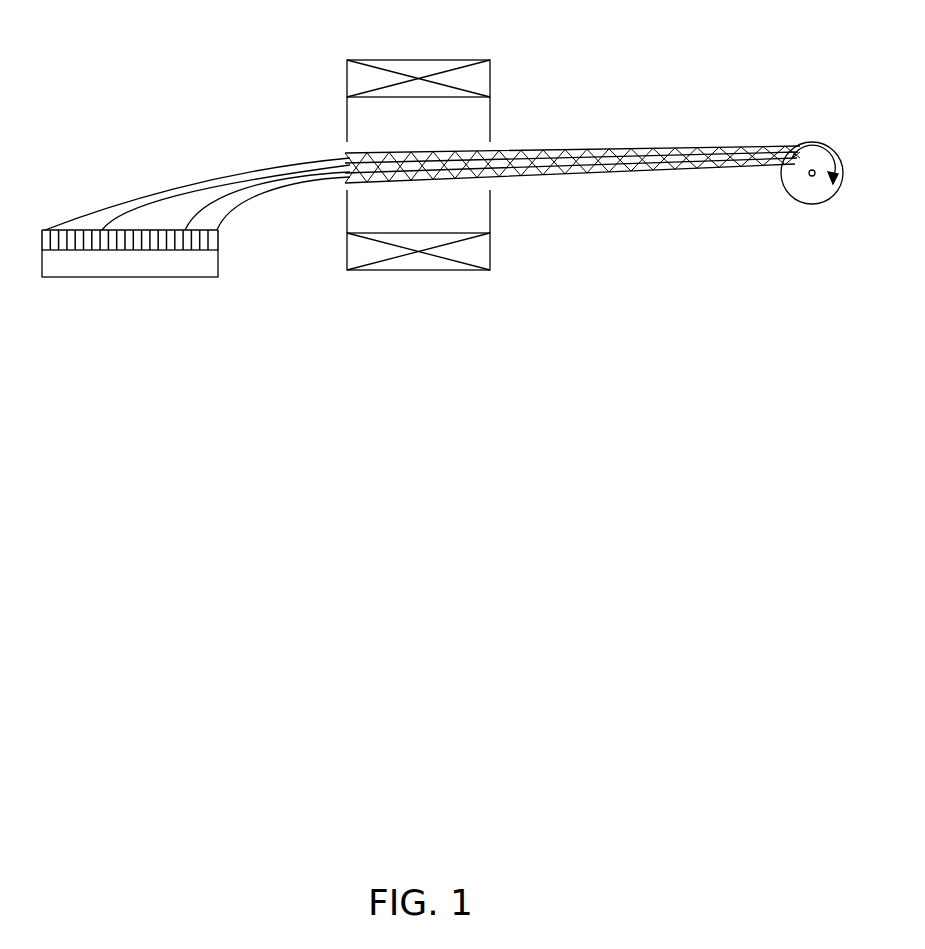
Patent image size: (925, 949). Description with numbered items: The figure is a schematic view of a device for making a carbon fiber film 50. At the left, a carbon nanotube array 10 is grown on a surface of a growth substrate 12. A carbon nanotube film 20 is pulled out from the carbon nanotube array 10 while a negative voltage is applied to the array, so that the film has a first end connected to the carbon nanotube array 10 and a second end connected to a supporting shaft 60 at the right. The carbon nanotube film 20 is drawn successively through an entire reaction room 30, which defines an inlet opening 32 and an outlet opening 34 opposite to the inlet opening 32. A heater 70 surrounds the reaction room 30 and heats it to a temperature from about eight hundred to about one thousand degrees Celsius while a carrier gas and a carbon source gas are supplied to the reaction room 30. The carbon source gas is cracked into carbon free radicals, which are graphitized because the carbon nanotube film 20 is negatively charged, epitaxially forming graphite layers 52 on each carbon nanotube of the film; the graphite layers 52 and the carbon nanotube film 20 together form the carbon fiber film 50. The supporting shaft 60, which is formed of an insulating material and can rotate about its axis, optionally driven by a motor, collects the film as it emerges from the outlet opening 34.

The carbon nanotube array 10 is at (218, 240).
The growth substrate 12 is at (172, 270).
The carbon nanotube film 20 is at (270, 190).
The reaction room 30 is at (370, 207).
The inlet opening 32 is at (342, 147).
The outlet opening 34 is at (493, 145).
The carbon fiber film 50 is at (740, 147).
The graphite layers 52 is at (463, 177).
The supporting shaft 60 is at (808, 188).
The heater 70 is at (410, 68).